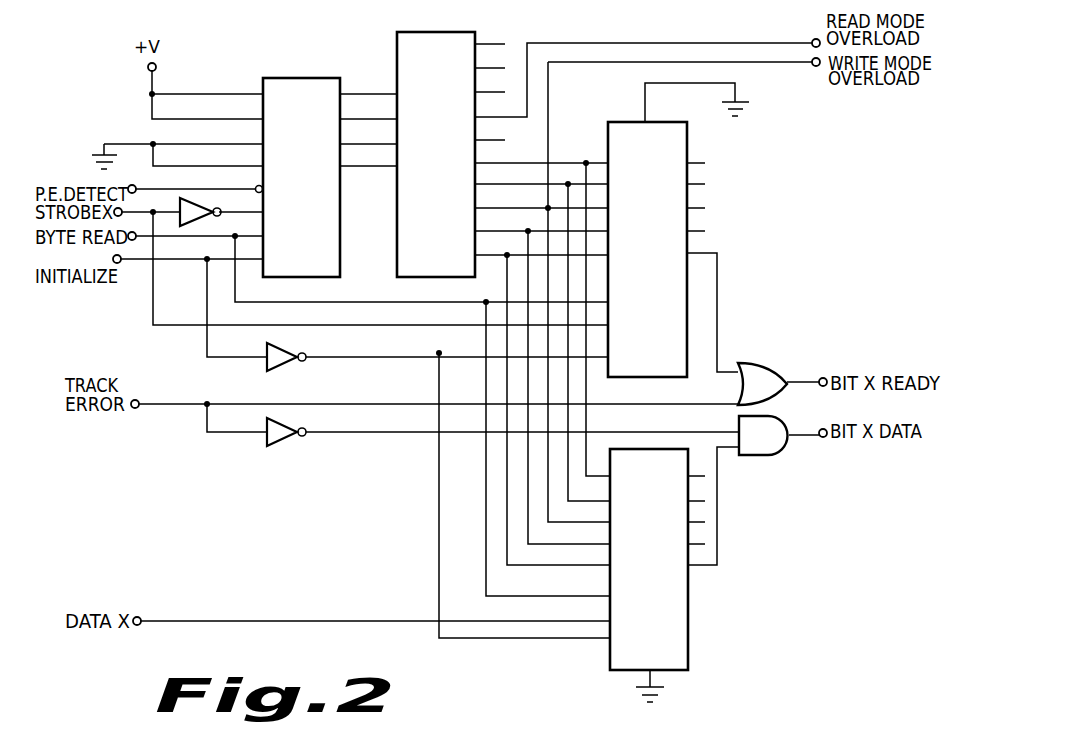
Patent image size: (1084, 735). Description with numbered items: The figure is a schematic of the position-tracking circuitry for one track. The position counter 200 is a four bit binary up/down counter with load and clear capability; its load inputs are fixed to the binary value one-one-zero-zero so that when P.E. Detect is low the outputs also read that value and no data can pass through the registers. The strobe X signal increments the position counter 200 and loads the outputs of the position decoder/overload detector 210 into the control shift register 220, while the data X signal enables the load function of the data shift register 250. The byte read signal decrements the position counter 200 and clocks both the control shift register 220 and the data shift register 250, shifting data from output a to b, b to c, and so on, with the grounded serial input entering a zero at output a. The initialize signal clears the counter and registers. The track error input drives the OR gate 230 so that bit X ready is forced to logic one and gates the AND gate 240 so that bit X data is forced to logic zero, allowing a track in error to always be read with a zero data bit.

The position counter 200 is at (296, 78).
The position decoder/overload detector 210 is at (397, 37).
The control shift register 220 is at (622, 122).
The OR gate 230 is at (755, 363).
The AND gate 240 is at (758, 456).
The data shift register 250 is at (688, 660).